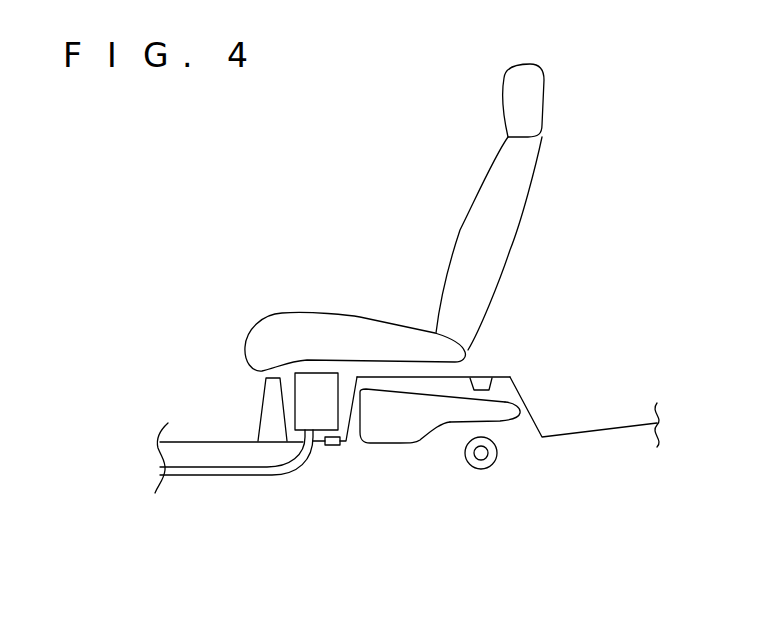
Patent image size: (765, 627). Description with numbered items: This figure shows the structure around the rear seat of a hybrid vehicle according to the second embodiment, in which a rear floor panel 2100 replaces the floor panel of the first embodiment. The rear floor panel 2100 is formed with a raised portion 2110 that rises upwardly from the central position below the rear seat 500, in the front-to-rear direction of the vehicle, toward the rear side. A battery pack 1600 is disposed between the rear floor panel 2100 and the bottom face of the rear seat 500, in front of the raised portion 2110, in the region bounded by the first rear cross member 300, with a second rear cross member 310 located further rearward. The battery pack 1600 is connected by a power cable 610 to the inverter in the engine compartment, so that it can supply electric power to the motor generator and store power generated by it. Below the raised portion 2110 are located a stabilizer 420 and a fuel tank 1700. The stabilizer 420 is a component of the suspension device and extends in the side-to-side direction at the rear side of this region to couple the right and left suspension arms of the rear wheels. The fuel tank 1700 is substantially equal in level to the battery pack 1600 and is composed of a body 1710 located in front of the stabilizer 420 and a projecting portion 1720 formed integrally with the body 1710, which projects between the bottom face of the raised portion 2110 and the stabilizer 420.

The rear seat 500 is at (247, 330).
The battery pack 1600 is at (315, 373).
The raised portion 2110 is at (407, 378).
The first rear cross member 300 is at (263, 406).
The second rear cross member 310 is at (508, 387).
The power cable 610 is at (205, 478).
The fuel tank 1700 is at (362, 450).
The body 1710 is at (402, 443).
The projecting portion 1720 is at (503, 423).
The stabilizer 420 is at (472, 470).
The rear floor panel 2100 is at (607, 432).